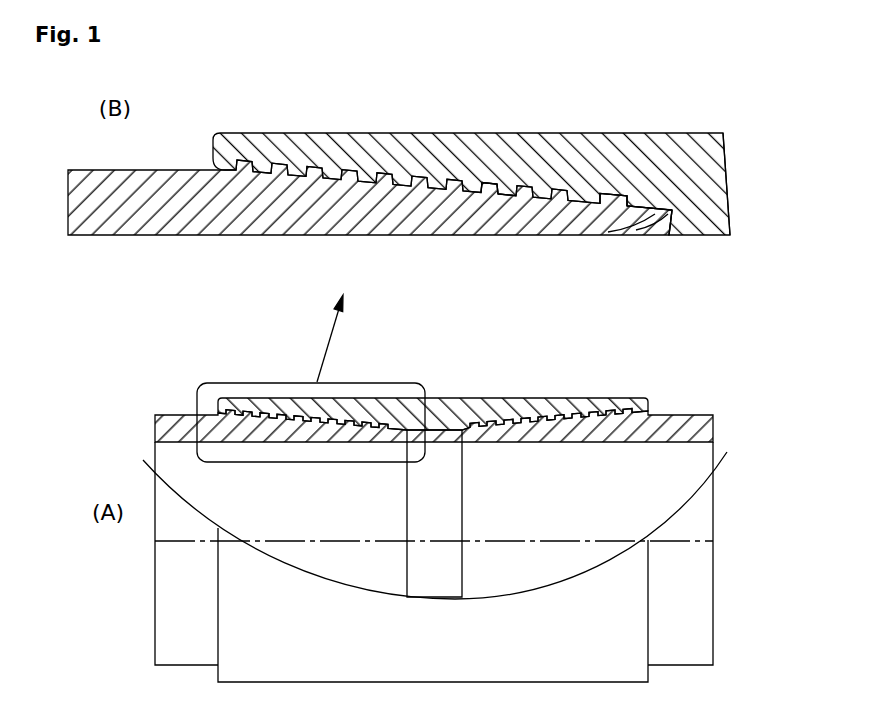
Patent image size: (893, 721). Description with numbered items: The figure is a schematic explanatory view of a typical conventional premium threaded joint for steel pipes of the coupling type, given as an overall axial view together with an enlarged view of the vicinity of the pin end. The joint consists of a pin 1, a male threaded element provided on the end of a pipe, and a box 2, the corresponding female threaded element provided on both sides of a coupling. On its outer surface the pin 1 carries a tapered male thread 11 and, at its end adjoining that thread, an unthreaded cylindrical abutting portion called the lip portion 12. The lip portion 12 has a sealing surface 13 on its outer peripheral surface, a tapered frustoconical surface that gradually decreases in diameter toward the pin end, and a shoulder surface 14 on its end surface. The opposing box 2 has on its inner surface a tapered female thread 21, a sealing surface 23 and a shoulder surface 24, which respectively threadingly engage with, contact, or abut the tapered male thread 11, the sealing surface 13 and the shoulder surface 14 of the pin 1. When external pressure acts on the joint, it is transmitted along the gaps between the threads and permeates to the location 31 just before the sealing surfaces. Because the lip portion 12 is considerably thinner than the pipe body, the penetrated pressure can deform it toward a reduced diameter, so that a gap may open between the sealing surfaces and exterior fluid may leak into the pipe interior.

The pin 1 is at (303, 207).
The box 2 is at (598, 162).
The tapered male thread 11 is at (488, 193).
The lip portion 12 is at (590, 233).
The sealing surface 13 is at (630, 227).
The shoulder surface 14 is at (657, 237).
The tapered female thread 21 is at (507, 187).
The sealing surface 23 is at (660, 207).
The shoulder surface 24 is at (673, 223).
The location just before the sealing surfaces 31 is at (613, 197).